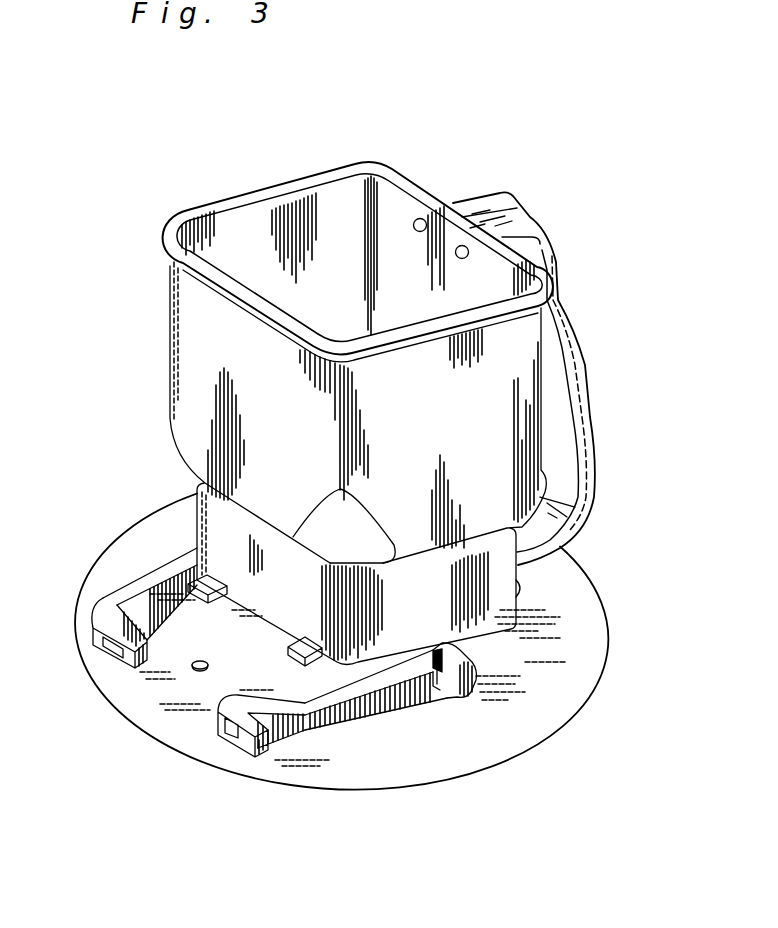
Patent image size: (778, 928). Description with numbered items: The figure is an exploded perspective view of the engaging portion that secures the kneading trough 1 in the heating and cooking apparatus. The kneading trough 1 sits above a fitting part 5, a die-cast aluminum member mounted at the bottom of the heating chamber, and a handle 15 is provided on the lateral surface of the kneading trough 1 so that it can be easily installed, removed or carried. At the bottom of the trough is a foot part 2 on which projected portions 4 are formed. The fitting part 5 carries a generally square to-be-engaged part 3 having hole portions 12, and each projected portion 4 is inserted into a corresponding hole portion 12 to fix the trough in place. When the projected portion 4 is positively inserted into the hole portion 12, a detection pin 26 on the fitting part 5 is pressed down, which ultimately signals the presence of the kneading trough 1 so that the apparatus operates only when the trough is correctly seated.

The kneading trough 1 is at (168, 347).
The foot part 2 is at (197, 530).
The to-be-engaged part 3 is at (423, 698).
The projected portion 4 is at (288, 652).
The fitting part 5 is at (378, 770).
The hole portion 12 is at (230, 728).
The handle 15 is at (580, 358).
The detection pin 26 is at (196, 676).